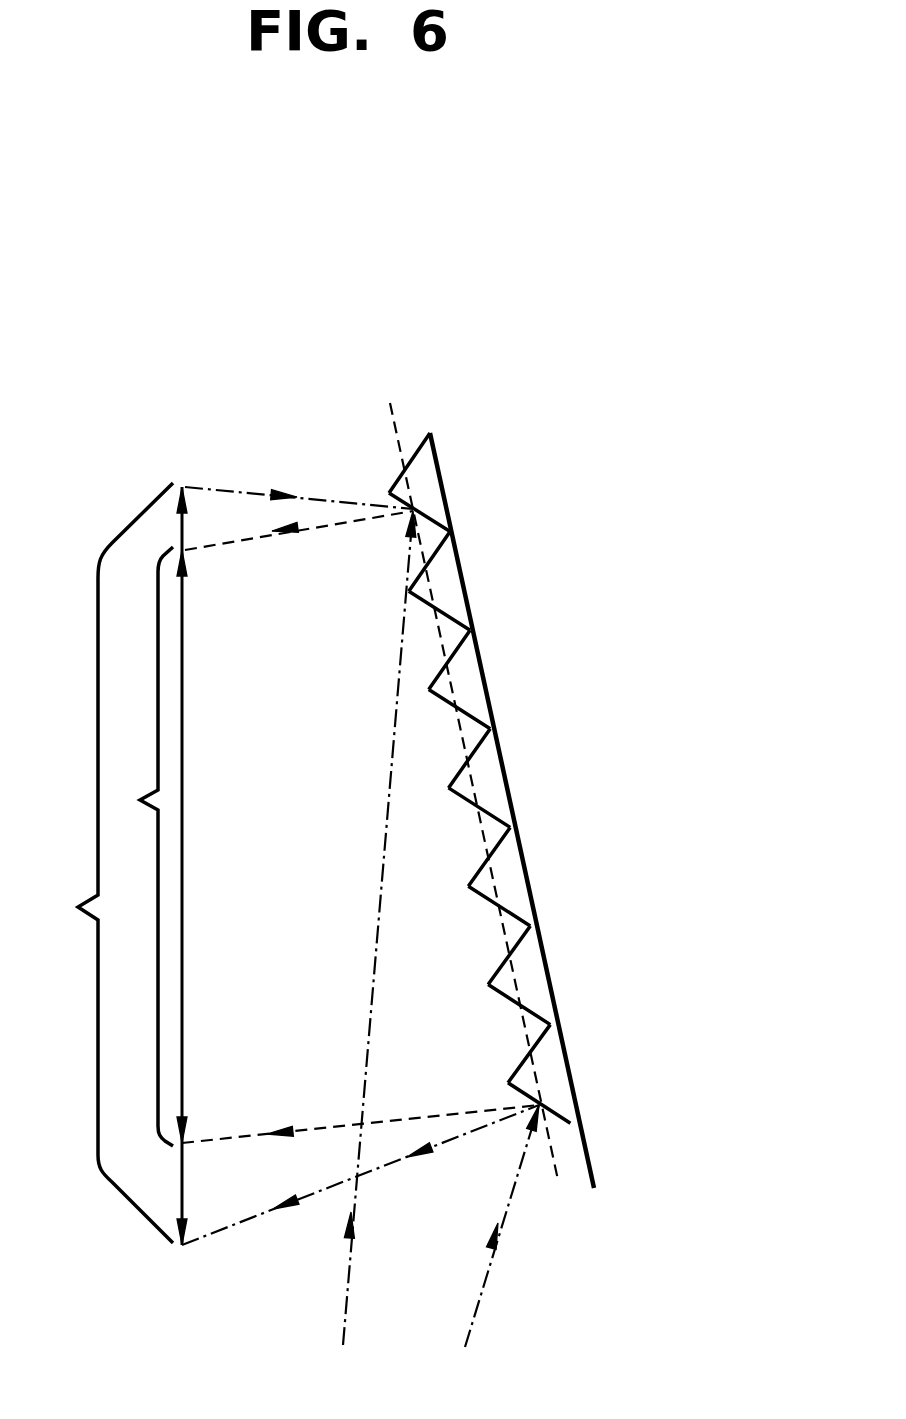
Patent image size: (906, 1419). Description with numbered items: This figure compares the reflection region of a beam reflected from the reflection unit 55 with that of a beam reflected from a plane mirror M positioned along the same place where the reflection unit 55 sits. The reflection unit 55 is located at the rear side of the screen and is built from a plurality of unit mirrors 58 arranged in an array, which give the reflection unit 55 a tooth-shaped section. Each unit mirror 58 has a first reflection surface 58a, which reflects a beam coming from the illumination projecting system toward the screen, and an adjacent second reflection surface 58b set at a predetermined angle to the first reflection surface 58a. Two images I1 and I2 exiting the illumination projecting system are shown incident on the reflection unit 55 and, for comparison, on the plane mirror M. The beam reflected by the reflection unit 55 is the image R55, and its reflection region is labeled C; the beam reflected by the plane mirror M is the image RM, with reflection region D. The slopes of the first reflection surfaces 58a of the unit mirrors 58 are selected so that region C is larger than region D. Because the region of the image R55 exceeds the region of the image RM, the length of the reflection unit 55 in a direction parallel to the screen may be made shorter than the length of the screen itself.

The reflection unit 55 is at (584, 810).
The unit mirrors 58 is at (584, 778).
The first reflection surface 58a is at (477, 807).
The second reflection surface 58b is at (468, 757).
The plane mirror M is at (393, 436).
The image I1 is at (504, 1226).
The image I2 is at (379, 928).
The image reflected by the reflection unit R55 is at (360, 852).
The image reflected by the plane mirror RM is at (360, 827).
The region of the image reflected by the reflection unit C is at (111, 864).
The region of the image reflected by the plane mirror D is at (147, 846).